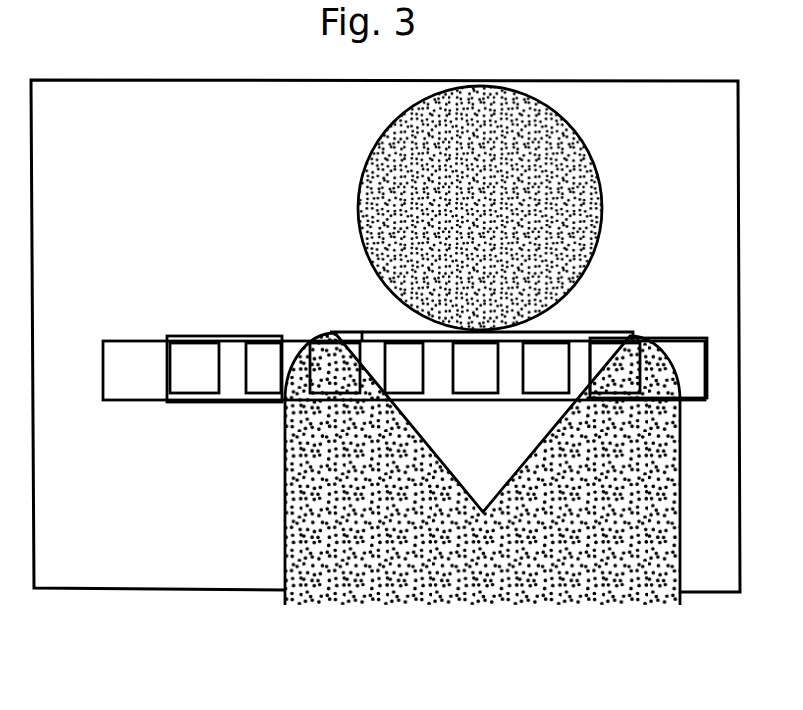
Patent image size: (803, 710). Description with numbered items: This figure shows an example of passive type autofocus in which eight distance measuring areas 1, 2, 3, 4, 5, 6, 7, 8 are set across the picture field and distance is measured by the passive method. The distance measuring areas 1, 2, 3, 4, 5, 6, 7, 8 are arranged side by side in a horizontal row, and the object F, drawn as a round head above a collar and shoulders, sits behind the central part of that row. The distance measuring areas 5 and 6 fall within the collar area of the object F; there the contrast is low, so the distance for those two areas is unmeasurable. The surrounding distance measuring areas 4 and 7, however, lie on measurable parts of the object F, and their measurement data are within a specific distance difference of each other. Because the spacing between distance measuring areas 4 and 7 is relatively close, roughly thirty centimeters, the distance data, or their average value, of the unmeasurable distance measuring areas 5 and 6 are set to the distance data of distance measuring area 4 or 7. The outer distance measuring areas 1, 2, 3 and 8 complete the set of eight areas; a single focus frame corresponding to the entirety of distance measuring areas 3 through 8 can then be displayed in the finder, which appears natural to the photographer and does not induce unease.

The object F is at (603, 183).
The distance measuring area 1 is at (158, 402).
The distance measuring area 2 is at (230, 334).
The distance measuring area 3 is at (265, 402).
The distance measuring area 4 is at (362, 331).
The distance measuring area 5 is at (460, 405).
The distance measuring area 6 is at (538, 329).
The distance measuring area 7 is at (528, 405).
The distance measuring area 8 is at (677, 337).